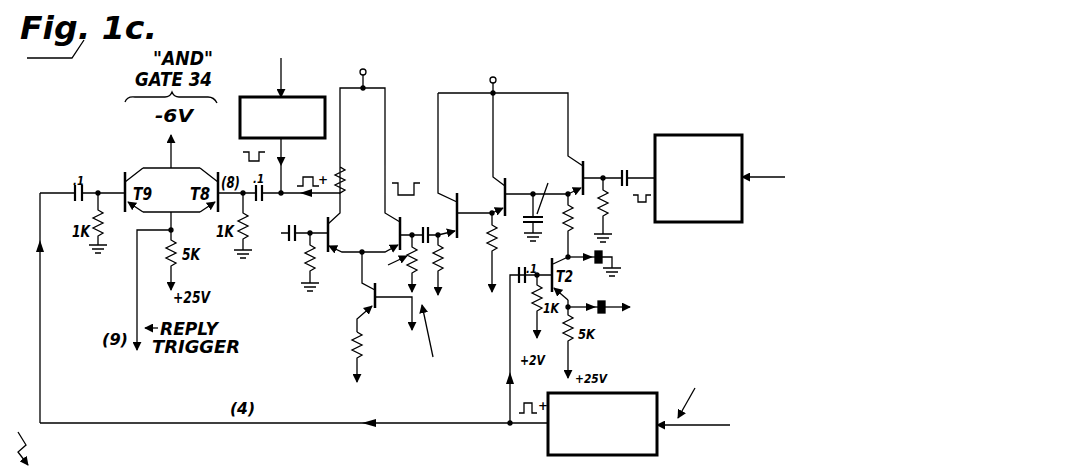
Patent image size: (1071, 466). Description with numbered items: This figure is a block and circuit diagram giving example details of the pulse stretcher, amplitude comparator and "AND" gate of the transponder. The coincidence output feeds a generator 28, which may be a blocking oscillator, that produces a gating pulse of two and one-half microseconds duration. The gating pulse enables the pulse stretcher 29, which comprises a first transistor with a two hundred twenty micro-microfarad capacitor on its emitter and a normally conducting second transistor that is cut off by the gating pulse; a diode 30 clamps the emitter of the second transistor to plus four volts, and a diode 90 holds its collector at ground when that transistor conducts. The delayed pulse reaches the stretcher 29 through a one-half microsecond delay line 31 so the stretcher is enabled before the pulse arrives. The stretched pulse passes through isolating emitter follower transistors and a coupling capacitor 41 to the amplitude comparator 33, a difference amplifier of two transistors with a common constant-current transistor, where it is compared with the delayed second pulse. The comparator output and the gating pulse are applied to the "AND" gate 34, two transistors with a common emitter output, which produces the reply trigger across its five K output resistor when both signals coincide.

The "AND" gate 34 is at (262, 46).
The amplitude comparator 33 is at (327, 62).
The pulse stretcher 29 is at (428, 72).
The coupling capacitor 41 is at (408, 206).
The 0.5 microsecond delay line 31 is at (697, 135).
The diode 90 is at (606, 257).
The diode 30 is at (610, 303).
The generator 28 is at (658, 445).